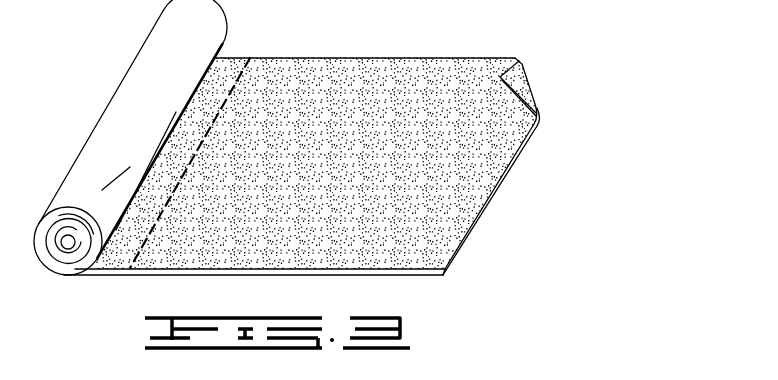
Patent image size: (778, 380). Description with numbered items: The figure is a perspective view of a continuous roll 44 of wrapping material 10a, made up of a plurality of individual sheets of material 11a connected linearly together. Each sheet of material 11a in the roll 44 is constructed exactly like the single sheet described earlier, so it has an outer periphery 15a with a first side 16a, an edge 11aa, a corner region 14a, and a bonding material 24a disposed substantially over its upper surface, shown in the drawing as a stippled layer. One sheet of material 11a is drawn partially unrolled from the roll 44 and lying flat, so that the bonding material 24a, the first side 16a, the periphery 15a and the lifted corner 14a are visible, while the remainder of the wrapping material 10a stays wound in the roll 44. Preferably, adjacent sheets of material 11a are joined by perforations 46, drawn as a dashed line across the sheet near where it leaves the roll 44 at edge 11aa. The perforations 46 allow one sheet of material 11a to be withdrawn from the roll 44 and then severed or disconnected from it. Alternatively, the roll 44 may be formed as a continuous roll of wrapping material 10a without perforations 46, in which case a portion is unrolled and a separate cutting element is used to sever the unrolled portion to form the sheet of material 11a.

The wrapping material 10a is at (390, 158).
The sheet of material 11a is at (341, 165).
The edge of sheet 11aa is at (236, 54).
The folded corner tab 14a is at (519, 76).
The release liner edge 16a is at (487, 147).
The adhesive layer 24a is at (365, 193).
The sheet edge 15a is at (463, 245).
The roll 44 is at (110, 104).
The perforations 46 is at (148, 236).